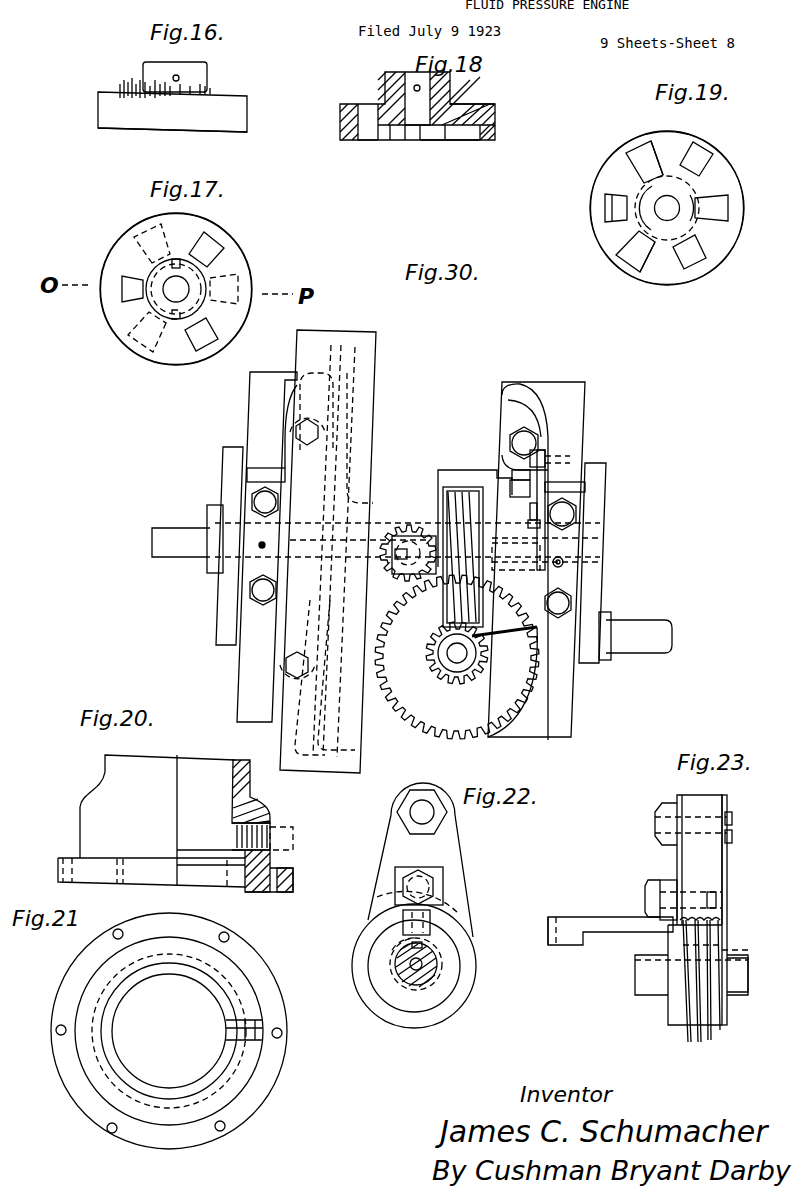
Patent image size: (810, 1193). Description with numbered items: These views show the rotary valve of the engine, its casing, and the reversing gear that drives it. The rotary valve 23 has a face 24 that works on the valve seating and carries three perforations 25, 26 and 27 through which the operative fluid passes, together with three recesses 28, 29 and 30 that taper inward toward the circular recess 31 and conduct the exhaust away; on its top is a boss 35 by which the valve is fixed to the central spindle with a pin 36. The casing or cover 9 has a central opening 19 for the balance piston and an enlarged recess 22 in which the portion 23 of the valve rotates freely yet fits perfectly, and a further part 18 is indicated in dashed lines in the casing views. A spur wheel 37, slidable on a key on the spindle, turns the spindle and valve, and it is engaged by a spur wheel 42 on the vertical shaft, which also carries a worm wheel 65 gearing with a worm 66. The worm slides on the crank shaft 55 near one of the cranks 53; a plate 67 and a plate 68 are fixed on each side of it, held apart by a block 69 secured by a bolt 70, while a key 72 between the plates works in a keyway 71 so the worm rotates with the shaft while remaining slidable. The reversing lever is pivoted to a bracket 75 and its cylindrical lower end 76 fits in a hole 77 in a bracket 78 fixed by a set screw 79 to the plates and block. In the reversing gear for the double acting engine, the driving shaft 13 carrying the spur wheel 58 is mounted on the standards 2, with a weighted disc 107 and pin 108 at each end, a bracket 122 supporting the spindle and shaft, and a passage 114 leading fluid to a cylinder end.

In FIG. 30, the standards 2 is at (411, 556).
In FIG. 20, the cover 9 is at (268, 810).
In FIG. 21, the cover 9 is at (248, 990).
In FIG. 30, the shaft 13 is at (618, 563).
In FIG. 20, the port passage 18 is at (293, 835).
In FIG. 21, the port passage 18 is at (257, 1013).
In FIG. 20, the central opening 19 is at (232, 783).
In FIG. 21, the central opening 19 is at (118, 1057).
In FIG. 20, the enlarged recess 22 is at (247, 882).
In FIG. 21, the enlarged recess 22 is at (245, 987).
In FIG. 16, the rotary valve 23 is at (172, 105).
In FIG. 18, the rotary valve 23 is at (492, 130).
In FIG. 16, the face of the rotating valve 24 is at (131, 131).
In FIG. 18, the face of the rotating valve 24 is at (462, 140).
In FIG. 19, the face of the rotating valve 24 is at (667, 208).
In FIG. 18, the perforation 25 is at (365, 140).
In FIG. 19, the perforation 25 is at (614, 203).
In FIG. 17, the perforation 25 is at (128, 286).
In FIG. 19, the perforation 26 is at (689, 252).
In FIG. 17, the perforation 26 is at (217, 247).
In FIG. 19, the perforation 27 is at (696, 159).
In FIG. 17, the perforation 27 is at (201, 334).
In FIG. 18, the recess 28 is at (496, 115).
In FIG. 19, the recess 28 is at (711, 208).
In FIG. 17, the recess 28 is at (224, 289).
In FIG. 19, the recess 29 is at (644, 162).
In FIG. 17, the recess 29 is at (147, 332).
In FIG. 19, the recess 30 is at (635, 251).
In FIG. 17, the recess 30 is at (152, 243).
In FIG. 17, the circular recess 31 is at (184, 289).
In FIG. 16, the boss 35 is at (197, 80).
In FIG. 18, the boss 35 is at (450, 90).
In FIG. 17, the boss 35 is at (210, 272).
In FIG. 18, the pin 36 is at (415, 85).
In FIG. 30, the spur wheel 37 is at (408, 525).
In FIG. 30, the spur wheel 42 is at (420, 723).
In FIG. 23, the crank 53 is at (748, 983).
In FIG. 22, the crank shaft 55 is at (405, 975).
In FIG. 23, the crank shaft 55 is at (645, 968).
In FIG. 30, the spur wheel 58 is at (509, 495).
In FIG. 30, the worm wheel 65 is at (455, 683).
In FIG. 30, the worm 66 is at (442, 617).
In FIG. 22, the worm 66 is at (393, 1018).
In FIG. 23, the worm 66 is at (710, 1040).
In FIG. 30, the plate 67 is at (432, 477).
In FIG. 22, the plate 67 is at (420, 1005).
In FIG. 23, the plate 67 is at (670, 1008).
In FIG. 23, the plate 68 is at (722, 1010).
In FIG. 23, the block 69 is at (699, 860).
In FIG. 22, the bolt 70 is at (428, 815).
In FIG. 23, the bolt 70 is at (732, 817).
In FIG. 30, the keyway 71 is at (514, 556).
In FIG. 22, the keyway 71 is at (435, 957).
In FIG. 23, the keyway 71 is at (748, 955).
In FIG. 30, the key 72 is at (447, 510).
In FIG. 22, the key 72 is at (404, 964).
In FIG. 23, the key 72 is at (698, 953).
In FIG. 30, the bracket 75 is at (552, 468).
In FIG. 30, the cylindrical lower end of lever 76 is at (517, 518).
In FIG. 30, the hole 77 is at (529, 530).
In FIG. 23, the hole 77 is at (563, 923).
In FIG. 30, the bracket 78 is at (510, 478).
In FIG. 22, the bracket 78 is at (402, 920).
In FIG. 23, the bracket 78 is at (613, 925).
In FIG. 22, the set screw 79 is at (413, 880).
In FIG. 23, the set screw 79 is at (650, 895).
In FIG. 30, the weighted disc 107 is at (598, 503).
In FIG. 30, the pin 108 is at (640, 632).
In FIG. 30, the passage 114 is at (317, 763).
In FIG. 30, the bracket 122 is at (370, 617).